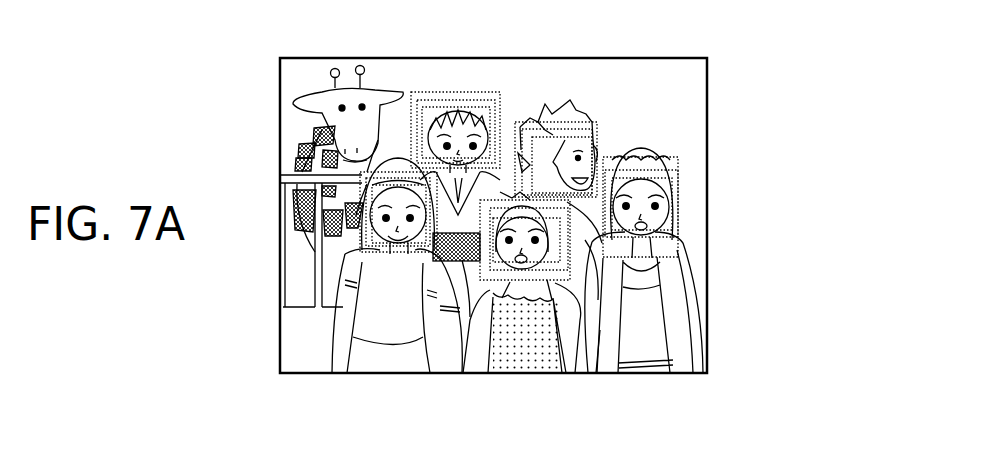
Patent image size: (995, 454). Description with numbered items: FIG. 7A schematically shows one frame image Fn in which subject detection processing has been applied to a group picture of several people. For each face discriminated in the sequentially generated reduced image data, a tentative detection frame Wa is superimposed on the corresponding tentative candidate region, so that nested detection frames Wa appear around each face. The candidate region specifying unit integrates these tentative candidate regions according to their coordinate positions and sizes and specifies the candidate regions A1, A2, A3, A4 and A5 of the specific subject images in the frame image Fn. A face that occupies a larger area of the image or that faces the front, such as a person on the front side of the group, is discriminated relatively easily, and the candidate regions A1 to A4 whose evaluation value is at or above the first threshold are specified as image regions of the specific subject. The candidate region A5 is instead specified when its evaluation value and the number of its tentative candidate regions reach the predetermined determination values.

The frame image Fn is at (708, 103).
The tentative detection frame Wa is at (471, 110).
The candidate region A1 is at (378, 257).
The candidate region A2 is at (533, 285).
The candidate region A3 is at (687, 222).
The candidate region A4 is at (428, 88).
The candidate region A5 is at (597, 113).